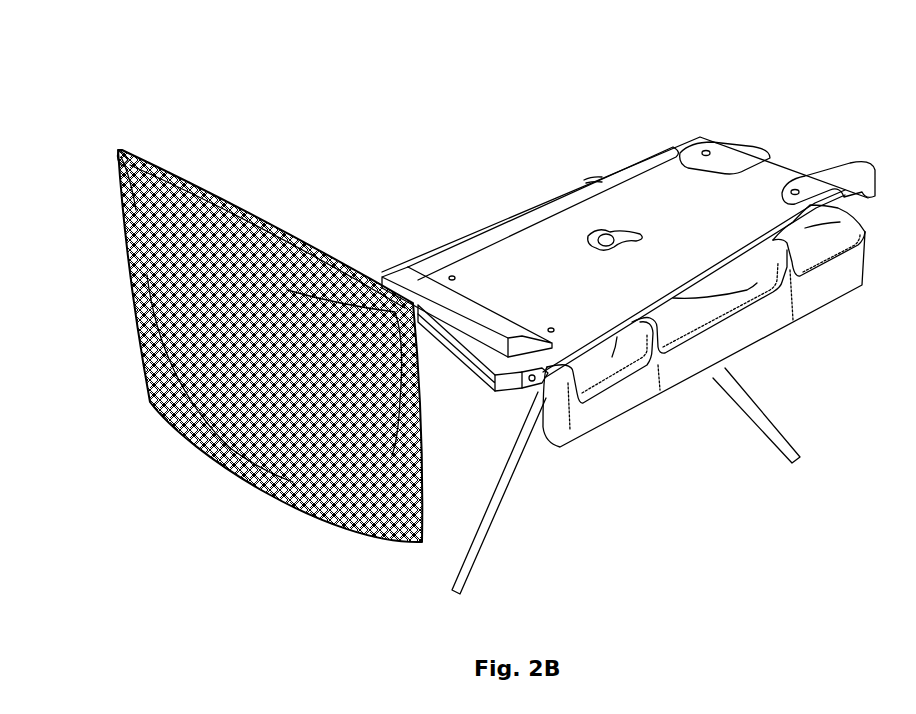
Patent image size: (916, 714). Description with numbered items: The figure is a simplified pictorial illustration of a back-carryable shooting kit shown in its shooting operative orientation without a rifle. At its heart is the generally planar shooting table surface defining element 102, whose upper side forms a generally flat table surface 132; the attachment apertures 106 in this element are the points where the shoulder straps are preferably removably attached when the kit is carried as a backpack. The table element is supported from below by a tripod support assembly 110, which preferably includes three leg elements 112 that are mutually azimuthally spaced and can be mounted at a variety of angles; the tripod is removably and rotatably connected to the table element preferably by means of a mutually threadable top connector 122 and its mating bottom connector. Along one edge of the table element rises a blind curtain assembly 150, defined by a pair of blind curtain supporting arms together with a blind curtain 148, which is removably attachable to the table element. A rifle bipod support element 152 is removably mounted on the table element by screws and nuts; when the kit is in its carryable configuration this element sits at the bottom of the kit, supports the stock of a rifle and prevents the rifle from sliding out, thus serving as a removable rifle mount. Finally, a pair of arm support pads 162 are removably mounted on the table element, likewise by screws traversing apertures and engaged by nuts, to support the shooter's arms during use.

The tripod support assembly 110 is at (522, 85).
The generally planar shooting table surface defining element 102 is at (782, 167).
The attachment apertures 106 is at (551, 328).
The leg elements 112 is at (527, 455).
The top connector 122 is at (630, 237).
The generally flat table surface 132 is at (563, 223).
The blind curtain 148 is at (293, 480).
The blind curtain assembly 150 is at (236, 350).
The rifle bipod support element 152 is at (387, 270).
The arm support pads 162 is at (713, 147).